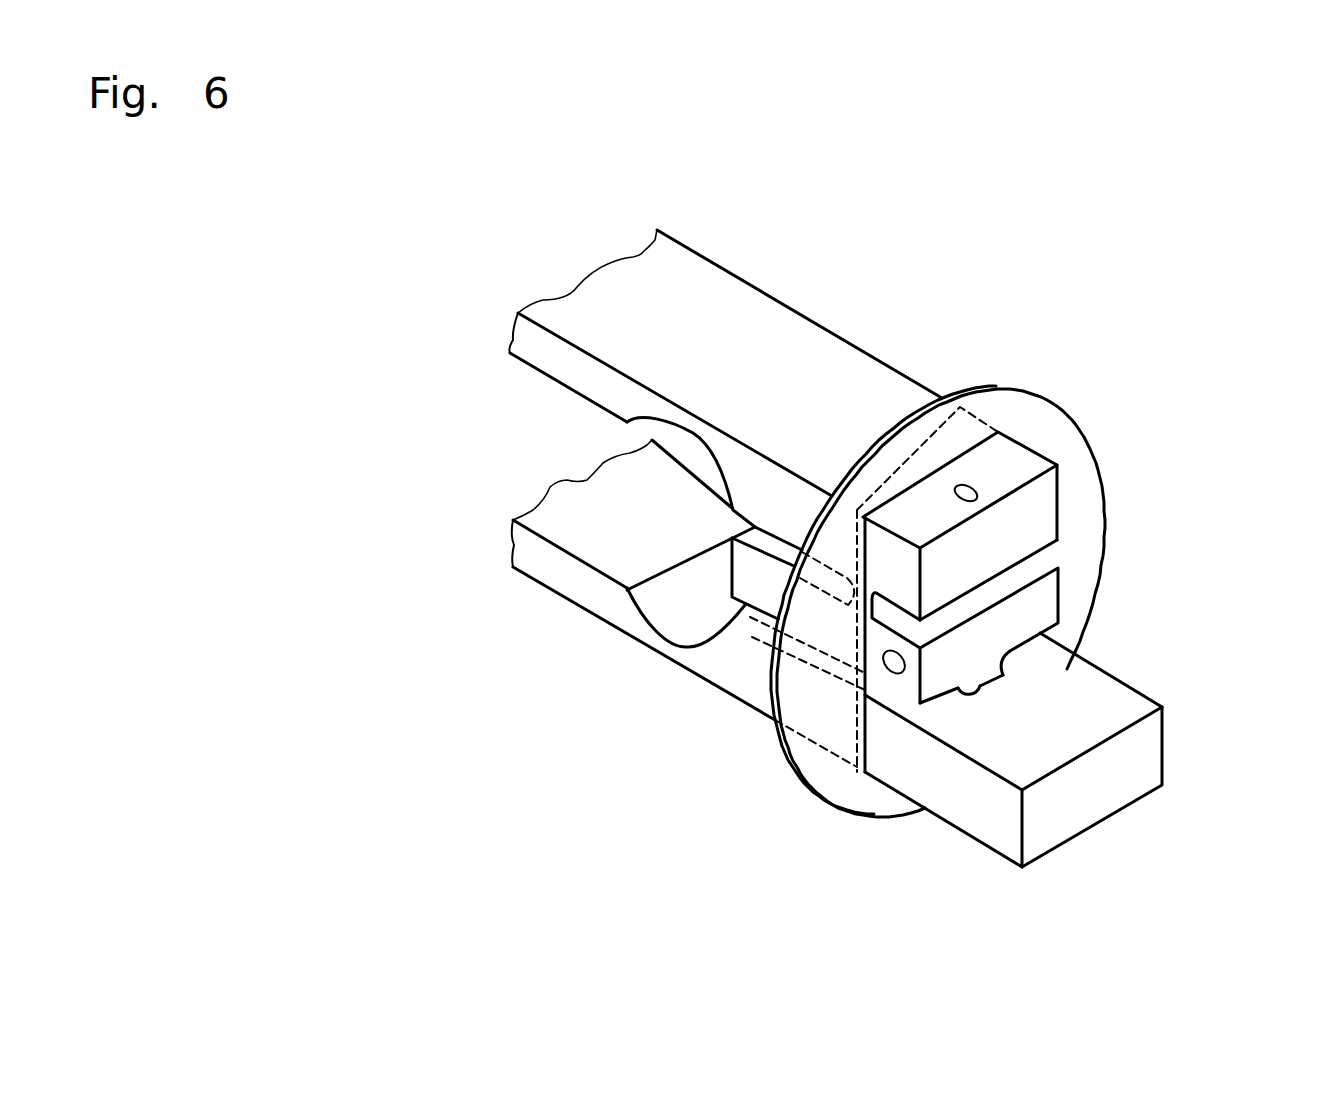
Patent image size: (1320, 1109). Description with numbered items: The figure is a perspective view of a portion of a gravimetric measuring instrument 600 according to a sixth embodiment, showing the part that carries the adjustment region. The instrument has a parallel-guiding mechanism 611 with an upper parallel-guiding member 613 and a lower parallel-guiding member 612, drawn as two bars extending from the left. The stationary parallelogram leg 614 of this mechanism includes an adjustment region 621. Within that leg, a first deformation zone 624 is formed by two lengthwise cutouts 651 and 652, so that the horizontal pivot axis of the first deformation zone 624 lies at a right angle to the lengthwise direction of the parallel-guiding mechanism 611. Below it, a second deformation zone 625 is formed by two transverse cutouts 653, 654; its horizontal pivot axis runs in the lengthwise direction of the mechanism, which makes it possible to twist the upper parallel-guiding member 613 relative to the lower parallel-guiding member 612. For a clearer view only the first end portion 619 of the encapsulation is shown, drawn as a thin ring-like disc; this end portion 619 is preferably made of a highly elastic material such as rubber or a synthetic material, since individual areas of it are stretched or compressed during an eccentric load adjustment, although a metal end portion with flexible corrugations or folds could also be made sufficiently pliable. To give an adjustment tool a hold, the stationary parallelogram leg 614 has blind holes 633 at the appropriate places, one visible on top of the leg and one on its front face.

The gravimetric measuring instrument 600 is at (866, 276).
The parallel-guiding mechanism 611 is at (616, 698).
The lower parallel-guiding member 612 is at (553, 568).
The upper parallel-guiding member 613 is at (617, 300).
The stationary parallelogram leg 614 is at (1098, 790).
The first end portion of the encapsulation 619 is at (1030, 416).
The adjustment region 621 is at (1138, 554).
The first deformation zone 624 is at (860, 667).
The second deformation zone 625 is at (988, 673).
The blind holes 633 is at (978, 490).
The lengthwise cutout 651 is at (1007, 583).
The lengthwise cutout 652 is at (775, 549).
The transverse cutout 653 is at (1020, 654).
The transverse cutout 654 is at (945, 700).